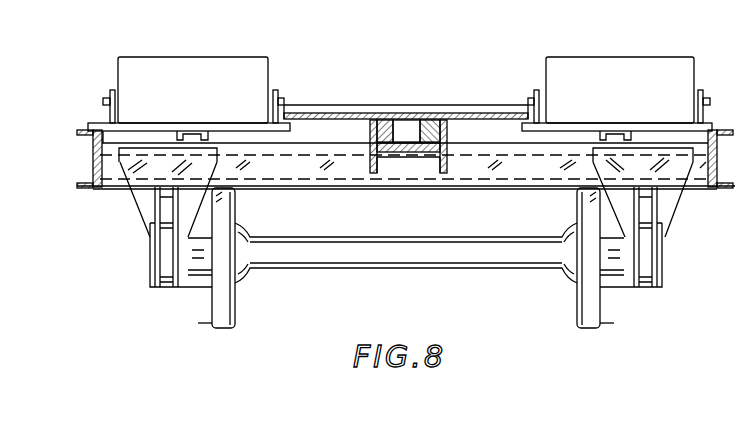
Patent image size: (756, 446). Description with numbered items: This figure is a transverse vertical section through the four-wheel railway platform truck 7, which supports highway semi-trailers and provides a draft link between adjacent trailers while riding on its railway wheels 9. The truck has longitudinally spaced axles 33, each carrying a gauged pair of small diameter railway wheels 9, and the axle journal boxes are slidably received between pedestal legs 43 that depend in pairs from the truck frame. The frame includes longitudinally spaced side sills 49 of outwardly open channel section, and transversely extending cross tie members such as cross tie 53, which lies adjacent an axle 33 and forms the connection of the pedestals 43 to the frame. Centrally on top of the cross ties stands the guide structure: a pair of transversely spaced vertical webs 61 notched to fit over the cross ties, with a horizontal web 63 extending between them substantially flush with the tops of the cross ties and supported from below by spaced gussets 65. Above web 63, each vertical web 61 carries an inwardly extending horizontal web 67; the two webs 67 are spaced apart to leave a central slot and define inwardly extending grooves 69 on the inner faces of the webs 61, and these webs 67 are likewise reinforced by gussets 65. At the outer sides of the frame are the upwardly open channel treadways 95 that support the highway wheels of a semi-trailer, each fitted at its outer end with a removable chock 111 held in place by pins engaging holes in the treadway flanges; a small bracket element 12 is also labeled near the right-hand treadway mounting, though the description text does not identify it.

The railway platform truck 7 is at (283, 195).
The railway wheels 9 is at (212, 298).
The mounting plate 12 is at (710, 92).
The axles 33 is at (387, 268).
The pedestal legs 43 is at (153, 213).
The side sills 49 is at (83, 130).
The cross tie member 53 is at (562, 172).
The webs 61 is at (372, 142).
The horizontal web 63 is at (403, 160).
The gussets 65 is at (388, 167).
The horizontal webs 67 is at (385, 130).
The grooves 69 is at (372, 152).
The channel treadways 95 is at (278, 97).
The removable chock 111 is at (198, 95).